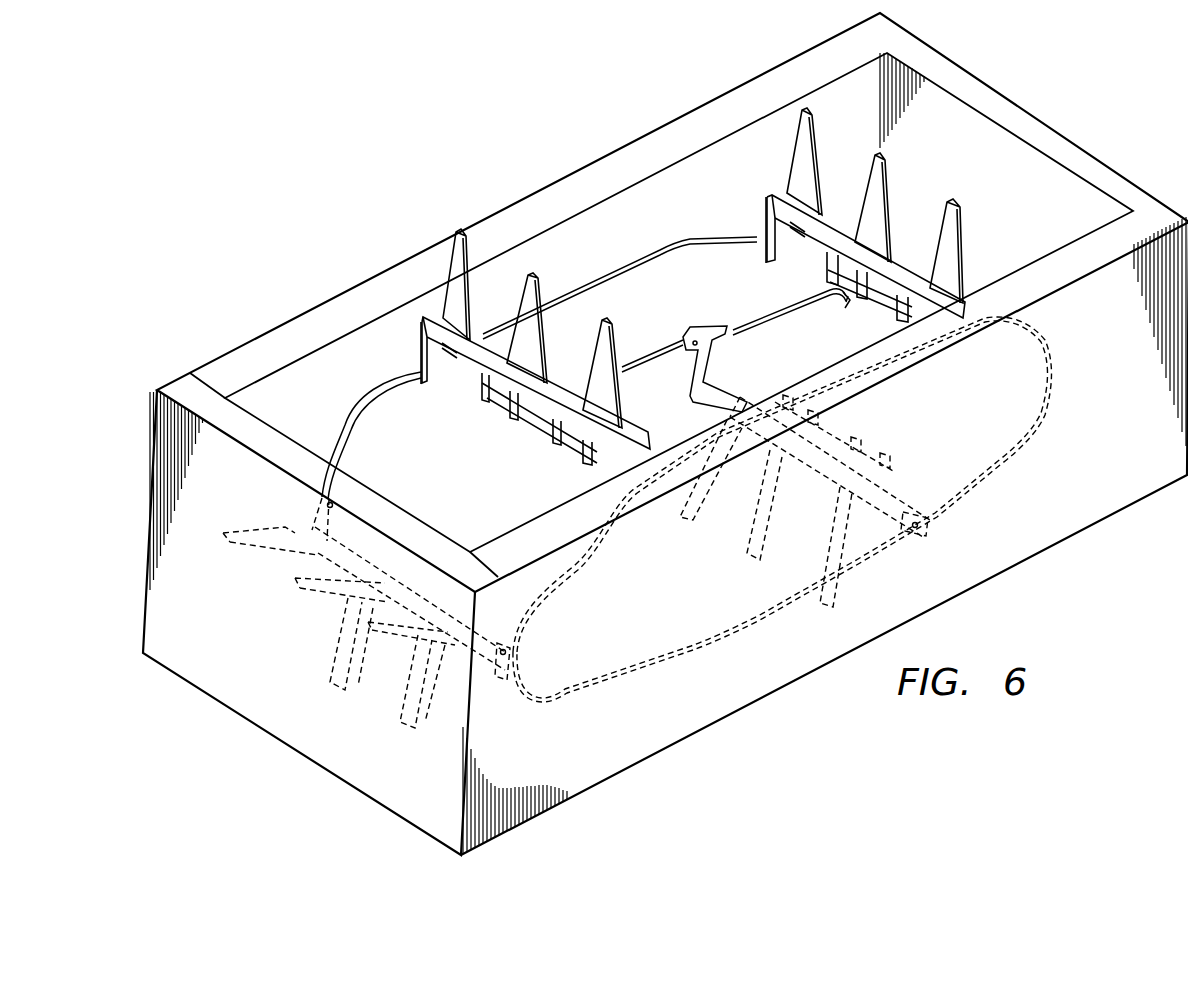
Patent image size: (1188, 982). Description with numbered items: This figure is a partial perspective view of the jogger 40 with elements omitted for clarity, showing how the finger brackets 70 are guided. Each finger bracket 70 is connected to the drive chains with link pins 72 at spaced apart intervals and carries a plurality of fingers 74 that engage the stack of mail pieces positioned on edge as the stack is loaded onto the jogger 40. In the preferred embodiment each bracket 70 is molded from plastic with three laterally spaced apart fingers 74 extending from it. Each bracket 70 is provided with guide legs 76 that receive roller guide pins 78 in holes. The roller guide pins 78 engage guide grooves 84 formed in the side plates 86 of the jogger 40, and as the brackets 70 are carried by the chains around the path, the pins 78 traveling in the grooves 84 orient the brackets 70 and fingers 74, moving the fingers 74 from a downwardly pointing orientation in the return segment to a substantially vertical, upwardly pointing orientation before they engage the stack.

The jogger 40 is at (494, 166).
The finger bracket 70 is at (558, 383).
The link pin 72 is at (843, 290).
The finger 74 is at (452, 246).
The guide leg 76 is at (420, 352).
The roller guide pin 78 is at (305, 520).
The guide groove 84 is at (690, 242).
The side plate 86 is at (342, 300).